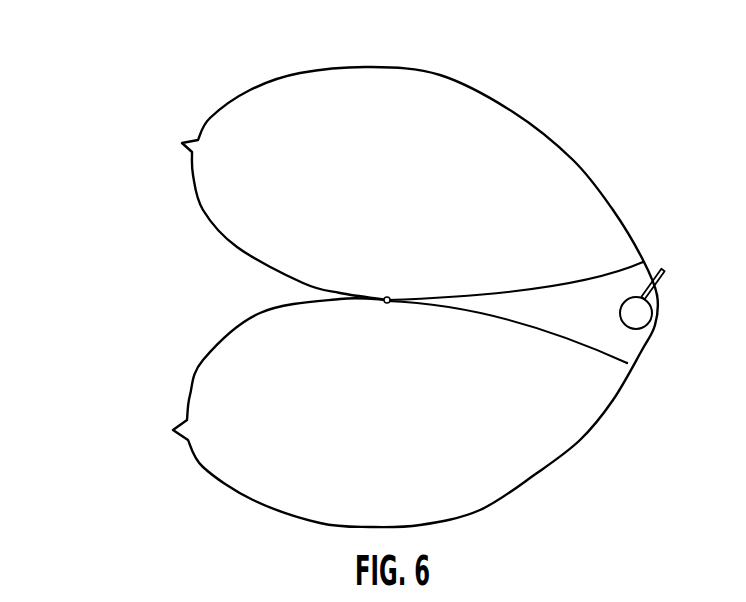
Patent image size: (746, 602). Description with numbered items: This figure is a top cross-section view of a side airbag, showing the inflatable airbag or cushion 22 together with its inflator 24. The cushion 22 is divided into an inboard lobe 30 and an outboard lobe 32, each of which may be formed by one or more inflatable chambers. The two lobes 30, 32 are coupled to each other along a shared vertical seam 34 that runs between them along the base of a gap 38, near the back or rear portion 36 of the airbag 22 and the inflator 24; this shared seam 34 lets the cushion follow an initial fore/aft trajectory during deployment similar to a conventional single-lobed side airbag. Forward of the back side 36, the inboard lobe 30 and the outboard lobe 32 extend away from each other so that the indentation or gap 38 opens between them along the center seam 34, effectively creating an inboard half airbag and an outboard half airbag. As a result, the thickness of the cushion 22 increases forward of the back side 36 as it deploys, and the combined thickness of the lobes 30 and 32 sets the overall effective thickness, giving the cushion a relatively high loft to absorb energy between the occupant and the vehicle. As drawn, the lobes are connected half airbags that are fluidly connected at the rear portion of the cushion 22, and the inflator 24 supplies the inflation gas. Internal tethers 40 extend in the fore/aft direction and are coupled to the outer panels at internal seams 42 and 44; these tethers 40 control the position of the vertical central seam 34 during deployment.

The airbag or cushion 22 is at (176, 67).
The inboard lobe 30 is at (506, 130).
The outboard lobe 32 is at (260, 490).
The shared vertical seam 34 is at (357, 298).
The back or rear portion 36 is at (696, 278).
The gap 38 is at (208, 303).
The internal tethers 40 is at (557, 290).
The internal seam 42 is at (643, 262).
The internal seam 44 is at (387, 297).
The inflator 24 is at (640, 328).